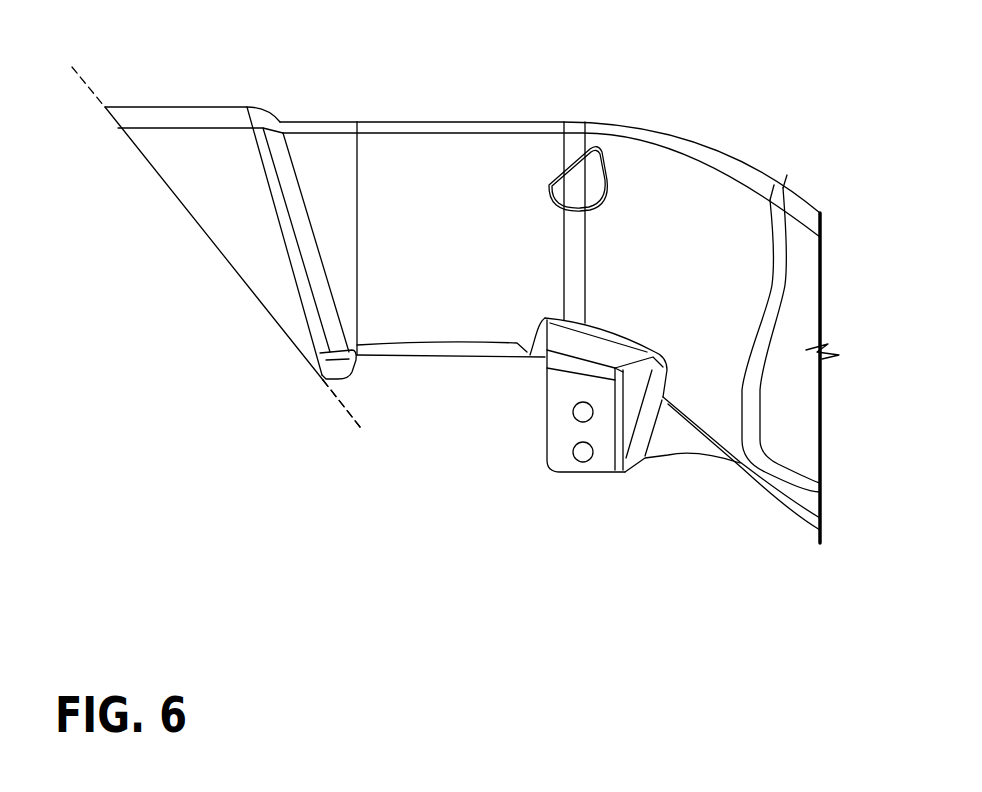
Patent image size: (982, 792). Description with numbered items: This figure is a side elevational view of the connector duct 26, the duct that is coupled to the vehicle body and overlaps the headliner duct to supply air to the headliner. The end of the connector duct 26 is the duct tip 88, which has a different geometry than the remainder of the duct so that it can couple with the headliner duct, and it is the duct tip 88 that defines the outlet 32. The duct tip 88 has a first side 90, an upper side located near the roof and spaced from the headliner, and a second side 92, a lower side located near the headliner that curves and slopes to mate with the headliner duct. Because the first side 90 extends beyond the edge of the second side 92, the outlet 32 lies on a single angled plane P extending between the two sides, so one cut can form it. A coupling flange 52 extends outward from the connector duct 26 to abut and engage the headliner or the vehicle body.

The connector duct 26 is at (697, 153).
The outlet 32 is at (185, 213).
The coupling flange 52 is at (605, 455).
The duct tip 88 is at (203, 107).
The first side 90 is at (104, 107).
The second side 92 is at (325, 382).
The angled plane P is at (348, 420).